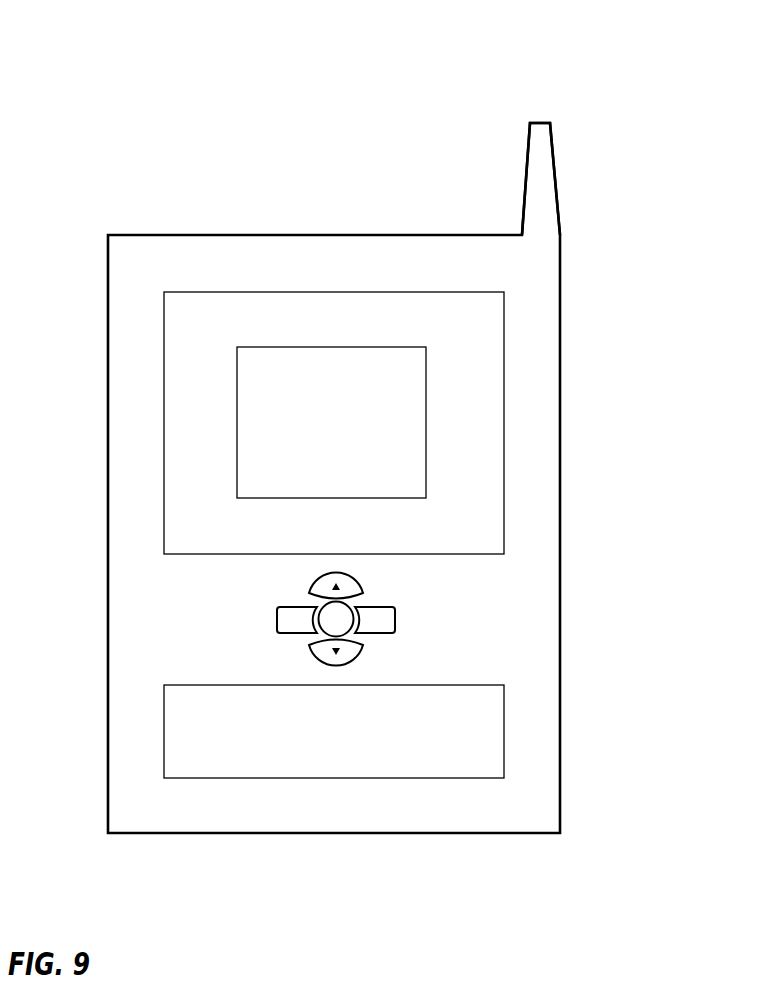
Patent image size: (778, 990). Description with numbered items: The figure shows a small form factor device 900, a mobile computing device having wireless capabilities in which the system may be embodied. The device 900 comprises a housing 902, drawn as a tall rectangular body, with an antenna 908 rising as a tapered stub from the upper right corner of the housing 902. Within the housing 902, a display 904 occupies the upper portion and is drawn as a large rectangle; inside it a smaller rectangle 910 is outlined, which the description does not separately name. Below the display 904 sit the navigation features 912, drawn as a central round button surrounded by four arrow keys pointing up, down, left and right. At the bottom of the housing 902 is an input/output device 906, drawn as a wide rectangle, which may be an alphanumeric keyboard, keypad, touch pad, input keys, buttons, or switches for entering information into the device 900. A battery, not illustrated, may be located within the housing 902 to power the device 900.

The small form factor device 900 is at (118, 127).
The housing 902 is at (560, 535).
The display 904 is at (504, 310).
The input/output (I/O) device 906 is at (504, 722).
The antenna 908 is at (527, 170).
The display window 910 is at (426, 443).
The navigation features 912 is at (422, 605).